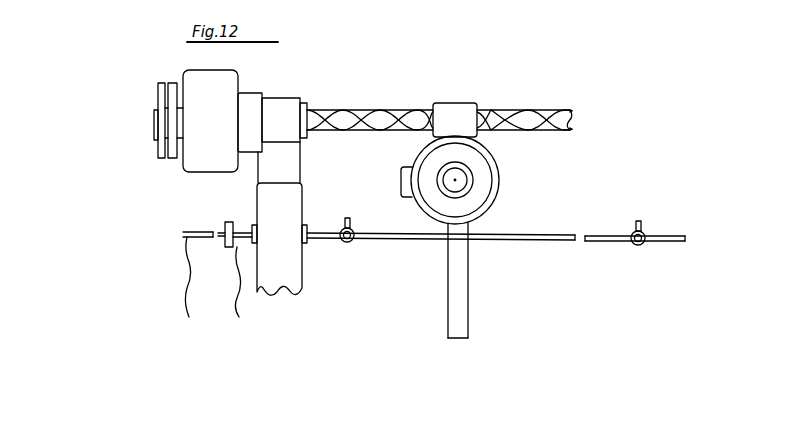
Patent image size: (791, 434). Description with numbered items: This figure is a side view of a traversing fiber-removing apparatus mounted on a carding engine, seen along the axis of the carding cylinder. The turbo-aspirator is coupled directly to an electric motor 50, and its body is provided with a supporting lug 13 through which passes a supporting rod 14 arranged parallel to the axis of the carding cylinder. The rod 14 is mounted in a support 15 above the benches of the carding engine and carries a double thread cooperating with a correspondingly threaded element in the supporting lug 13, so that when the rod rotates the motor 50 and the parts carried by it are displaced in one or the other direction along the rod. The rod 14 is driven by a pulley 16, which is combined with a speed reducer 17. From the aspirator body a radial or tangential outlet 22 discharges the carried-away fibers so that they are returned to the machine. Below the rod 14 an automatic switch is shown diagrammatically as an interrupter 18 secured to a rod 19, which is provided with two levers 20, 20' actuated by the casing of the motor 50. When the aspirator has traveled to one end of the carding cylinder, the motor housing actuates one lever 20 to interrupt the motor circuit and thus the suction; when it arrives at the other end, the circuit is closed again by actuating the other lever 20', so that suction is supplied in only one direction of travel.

The supporting lug 13 is at (467, 112).
The supporting rod 14 is at (320, 120).
The support 15 is at (285, 110).
The pulley 16 is at (167, 98).
The speed reducer 17 is at (220, 168).
The interrupter 18 is at (225, 238).
The rod 19 is at (527, 242).
The lever 20 is at (344, 213).
The lever 20' is at (624, 212).
The outlet 22 is at (455, 298).
The electric motor 50 is at (477, 167).